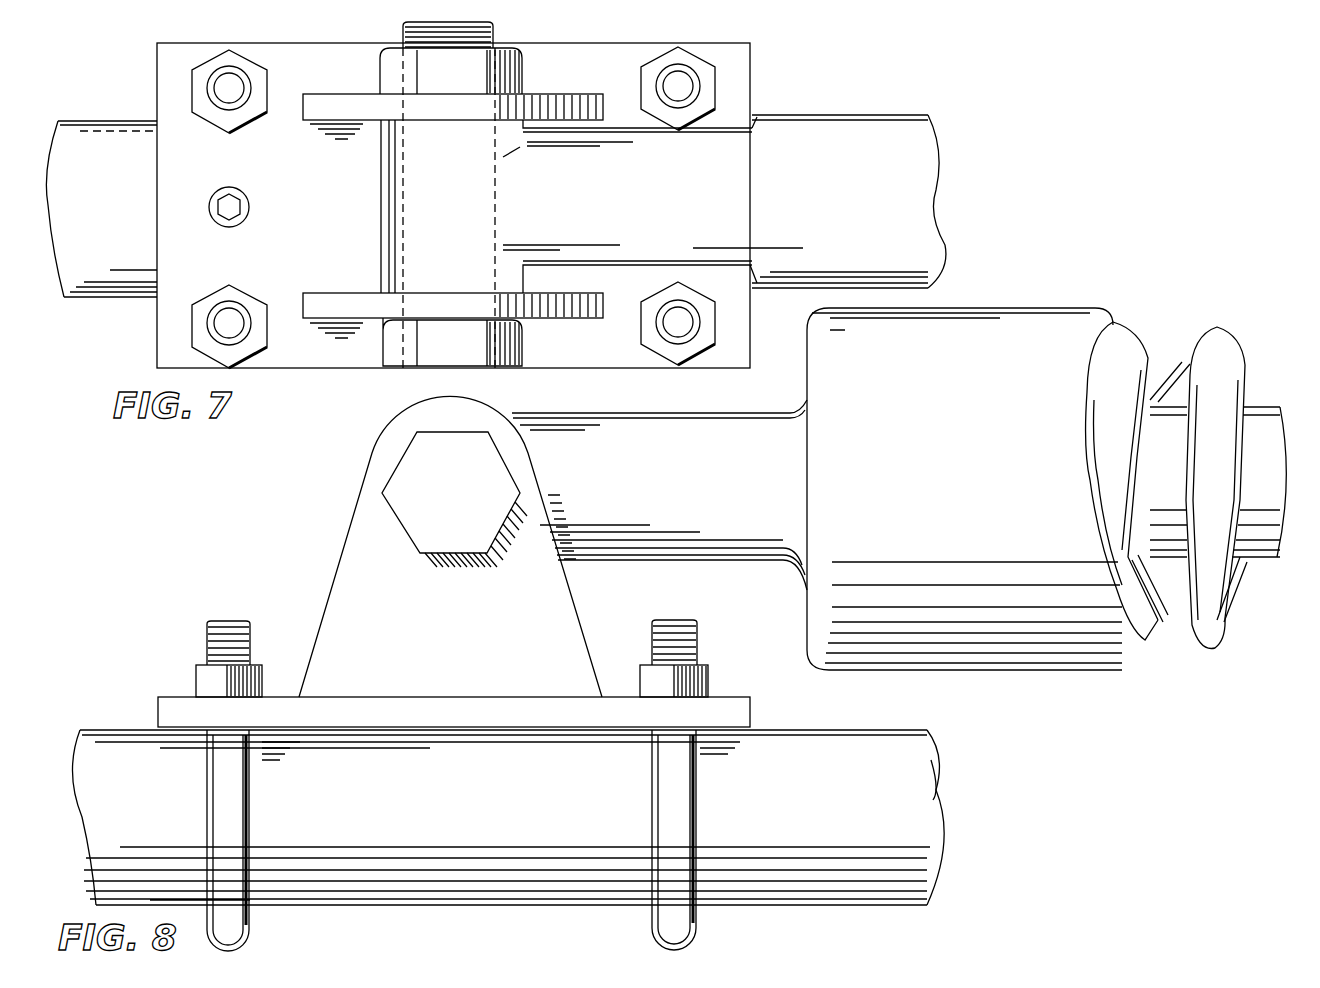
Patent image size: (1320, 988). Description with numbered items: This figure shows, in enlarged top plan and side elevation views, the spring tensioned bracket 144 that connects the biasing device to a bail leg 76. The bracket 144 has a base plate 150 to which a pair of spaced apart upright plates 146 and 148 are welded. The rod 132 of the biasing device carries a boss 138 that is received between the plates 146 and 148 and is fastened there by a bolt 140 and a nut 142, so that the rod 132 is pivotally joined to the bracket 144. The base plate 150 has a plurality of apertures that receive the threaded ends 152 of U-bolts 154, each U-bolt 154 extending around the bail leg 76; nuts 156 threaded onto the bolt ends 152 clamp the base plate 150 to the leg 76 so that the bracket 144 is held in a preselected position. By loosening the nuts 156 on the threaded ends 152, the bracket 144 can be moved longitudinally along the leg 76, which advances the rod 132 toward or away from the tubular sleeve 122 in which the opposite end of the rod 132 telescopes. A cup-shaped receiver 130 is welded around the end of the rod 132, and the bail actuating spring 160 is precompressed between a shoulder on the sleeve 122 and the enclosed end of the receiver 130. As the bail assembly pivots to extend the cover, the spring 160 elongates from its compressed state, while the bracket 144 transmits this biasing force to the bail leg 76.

In FIG. 7, the bail leg 76 is at (876, 131).
In FIG. 8, the bail leg 76 is at (355, 887).
In FIG. 8, the tubular sleeve 122 is at (1277, 525).
In FIG. 8, the cup-shaped receiver 130 is at (1048, 330).
In FIG. 7, the rod 132 is at (760, 158).
In FIG. 8, the rod 132 is at (650, 532).
In FIG. 7, the boss 138 is at (381, 180).
In FIG. 7, the bolt 140 is at (387, 352).
In FIG. 8, the bolt 140 is at (393, 477).
In FIG. 7, the nut 142 is at (512, 78).
In FIG. 7, the spring tensioned bracket 144 is at (333, 38).
In FIG. 8, the spring tensioned bracket 144 is at (333, 530).
In FIG. 7, the plate 146 is at (349, 294).
In FIG. 8, the plate 146 is at (343, 577).
In FIG. 7, the plate 148 is at (347, 95).
In FIG. 7, the base plate 150 is at (158, 329).
In FIG. 8, the base plate 150 is at (157, 697).
In FIG. 7, the threaded end 152 is at (212, 83).
In FIG. 8, the threaded end 152 is at (207, 625).
In FIG. 8, the U-bolt 154 is at (253, 912).
In FIG. 7, the nut 156 is at (228, 124).
In FIG. 8, the nut 156 is at (197, 668).
In FIG. 8, the bail actuating spring 160 is at (1227, 330).